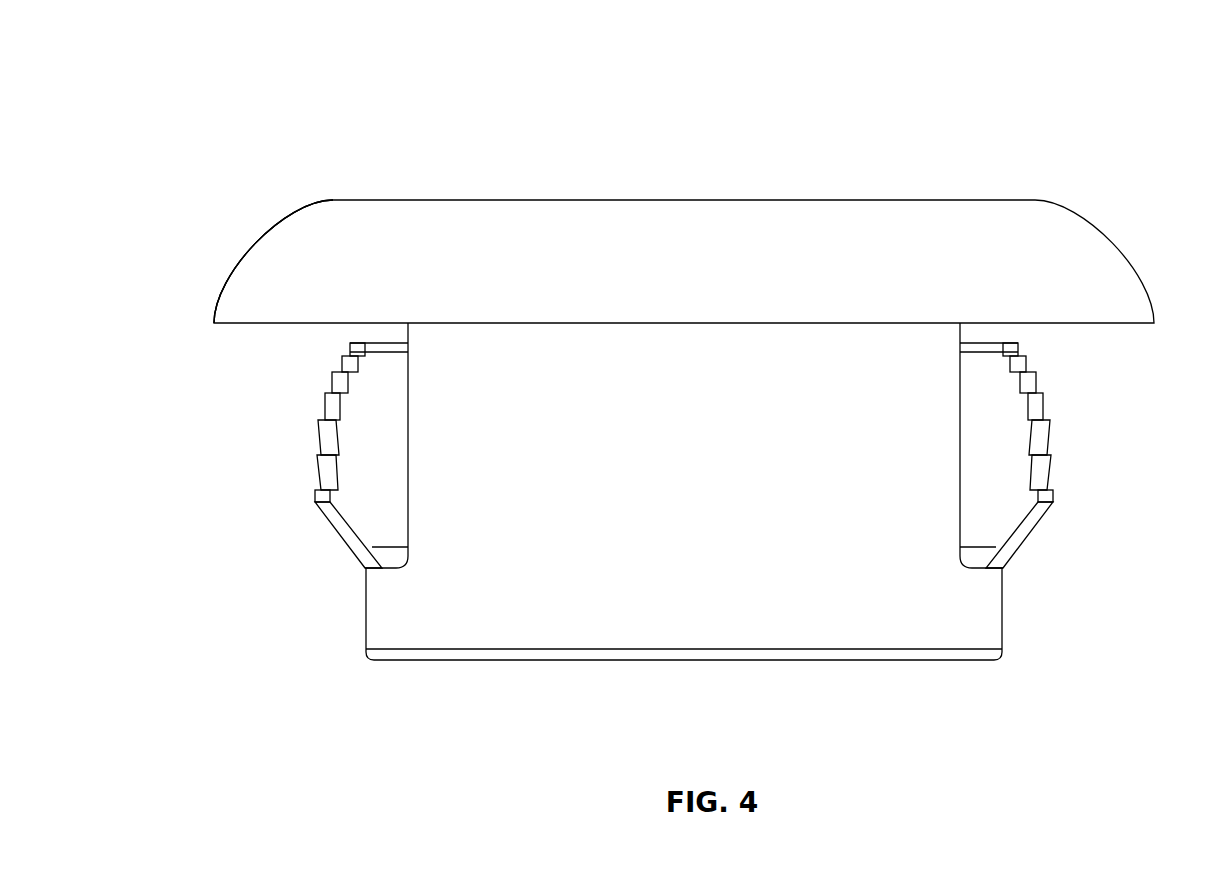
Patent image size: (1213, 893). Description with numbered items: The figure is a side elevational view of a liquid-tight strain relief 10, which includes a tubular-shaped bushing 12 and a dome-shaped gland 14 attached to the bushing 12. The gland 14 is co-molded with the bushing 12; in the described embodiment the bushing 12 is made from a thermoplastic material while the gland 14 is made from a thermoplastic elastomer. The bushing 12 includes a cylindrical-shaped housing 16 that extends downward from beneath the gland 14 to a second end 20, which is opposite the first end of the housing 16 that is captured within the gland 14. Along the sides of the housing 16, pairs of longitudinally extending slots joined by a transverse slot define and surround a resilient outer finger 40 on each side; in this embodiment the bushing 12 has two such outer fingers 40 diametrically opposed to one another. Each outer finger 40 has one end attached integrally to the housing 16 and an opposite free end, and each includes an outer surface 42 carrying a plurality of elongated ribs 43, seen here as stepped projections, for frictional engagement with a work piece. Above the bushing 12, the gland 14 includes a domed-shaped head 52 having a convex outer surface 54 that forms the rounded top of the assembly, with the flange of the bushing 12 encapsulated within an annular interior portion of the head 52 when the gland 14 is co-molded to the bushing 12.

The liquid-tight strain relief 10 is at (294, 70).
The bushing 12 is at (1002, 603).
The gland 14 is at (1098, 223).
The housing 16 is at (935, 502).
The second end 20 is at (398, 662).
The outer finger 40 is at (353, 435).
The outer surface 42 is at (327, 520).
The elongated ribs 43 is at (322, 417).
The head 52 is at (260, 268).
The convex outer surface 54 is at (274, 224).